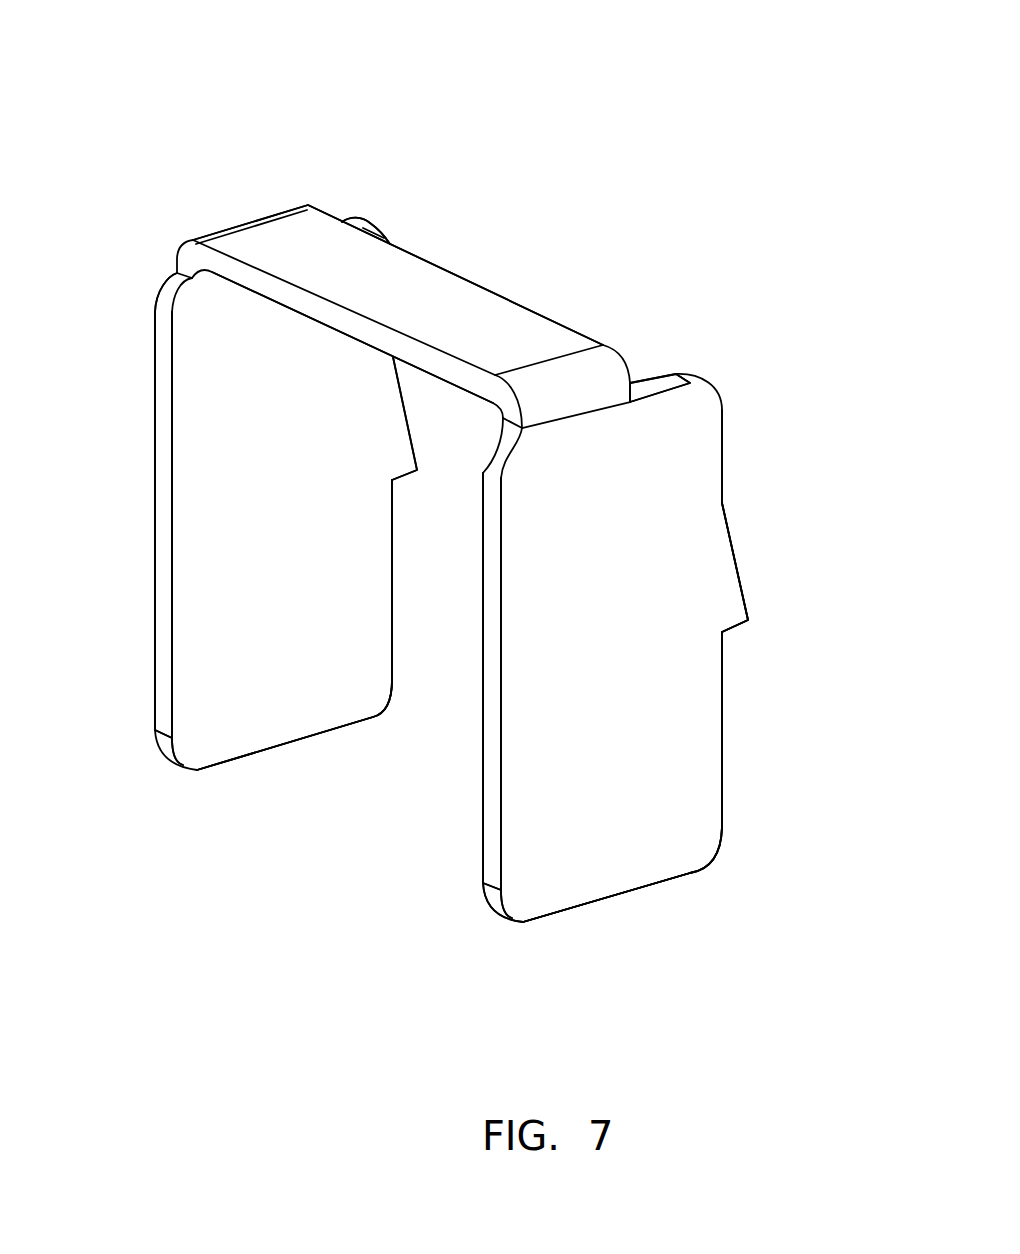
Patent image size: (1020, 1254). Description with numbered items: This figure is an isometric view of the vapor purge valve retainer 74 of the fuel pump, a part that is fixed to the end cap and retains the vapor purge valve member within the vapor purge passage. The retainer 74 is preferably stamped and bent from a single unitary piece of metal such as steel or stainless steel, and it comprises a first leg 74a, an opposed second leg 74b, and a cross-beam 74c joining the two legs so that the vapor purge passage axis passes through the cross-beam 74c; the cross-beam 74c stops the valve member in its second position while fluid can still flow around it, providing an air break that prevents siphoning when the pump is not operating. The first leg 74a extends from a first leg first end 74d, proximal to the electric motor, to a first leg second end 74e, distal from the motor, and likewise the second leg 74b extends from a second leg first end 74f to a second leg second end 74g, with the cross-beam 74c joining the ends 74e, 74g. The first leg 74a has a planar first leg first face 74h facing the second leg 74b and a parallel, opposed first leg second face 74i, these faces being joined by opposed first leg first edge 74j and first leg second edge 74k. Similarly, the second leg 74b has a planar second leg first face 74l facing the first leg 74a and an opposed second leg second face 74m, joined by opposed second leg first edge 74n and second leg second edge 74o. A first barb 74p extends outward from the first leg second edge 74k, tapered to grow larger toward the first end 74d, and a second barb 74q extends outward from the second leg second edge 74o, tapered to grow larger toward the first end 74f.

The vapor purge valve retainer 74 is at (772, 98).
The first leg 74a is at (150, 368).
The second leg 74b is at (700, 722).
The cross-beam 74c is at (440, 285).
The first leg first end 74d is at (325, 733).
The first leg second end 74e is at (352, 225).
The second leg first end 74f is at (613, 897).
The second leg second end 74g is at (652, 383).
The first leg first face 74h is at (243, 692).
The first leg second face 74i is at (155, 405).
The first leg first edge 74j is at (162, 622).
The first leg second edge 74k is at (392, 638).
The second leg first face 74l is at (483, 777).
The second leg second face 74m is at (642, 828).
The second leg first edge 74n is at (493, 868).
The second leg second edge 74o is at (721, 801).
The first barb 74p is at (403, 460).
The second barb 74q is at (735, 608).